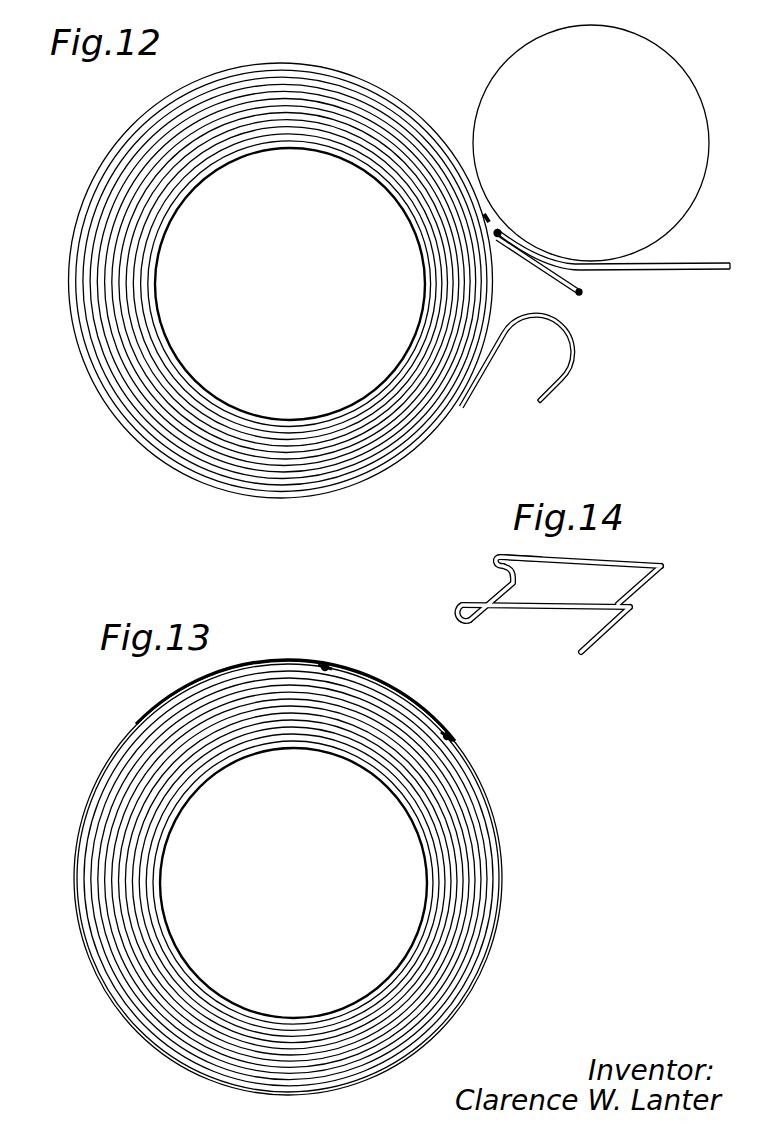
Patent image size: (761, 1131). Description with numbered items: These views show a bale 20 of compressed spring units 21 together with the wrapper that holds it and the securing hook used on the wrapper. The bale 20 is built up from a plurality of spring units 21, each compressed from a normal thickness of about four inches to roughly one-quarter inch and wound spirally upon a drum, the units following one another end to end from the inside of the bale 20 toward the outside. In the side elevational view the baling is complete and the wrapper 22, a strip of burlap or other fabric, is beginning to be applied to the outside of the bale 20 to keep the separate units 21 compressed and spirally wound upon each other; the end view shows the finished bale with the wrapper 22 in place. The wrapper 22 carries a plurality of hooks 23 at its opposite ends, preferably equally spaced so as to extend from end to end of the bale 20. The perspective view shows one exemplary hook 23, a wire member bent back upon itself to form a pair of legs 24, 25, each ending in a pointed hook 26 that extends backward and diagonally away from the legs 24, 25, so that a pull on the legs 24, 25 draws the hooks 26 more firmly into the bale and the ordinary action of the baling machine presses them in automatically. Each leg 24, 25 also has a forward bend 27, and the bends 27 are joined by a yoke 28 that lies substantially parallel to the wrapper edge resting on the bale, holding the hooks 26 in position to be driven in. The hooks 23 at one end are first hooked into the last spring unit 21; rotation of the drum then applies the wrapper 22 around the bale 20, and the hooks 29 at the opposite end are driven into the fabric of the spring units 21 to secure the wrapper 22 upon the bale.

In FIG. 12, the bale 20 is at (250, 274).
In FIG. 13, the bale 20 is at (266, 856).
In FIG. 12, the spring units 21 is at (362, 125).
In FIG. 13, the spring units 21 is at (157, 806).
In FIG. 12, the wrapper 22 is at (582, 296).
In FIG. 13, the wrapper 22 is at (150, 722).
In FIG. 12, the hooks 23 is at (500, 230).
In FIG. 13, the hooks 23 is at (335, 648).
In FIG. 14, the hooks 23 is at (521, 551).
In FIG. 14, the leg 24 is at (548, 606).
In FIG. 14, the leg 25 is at (585, 558).
In FIG. 14, the pointed hook 26 is at (640, 592).
In FIG. 14, the forward bend 27 is at (494, 577).
In FIG. 14, the yoke 28 is at (494, 590).
In FIG. 13, the hooks 29 is at (450, 738).